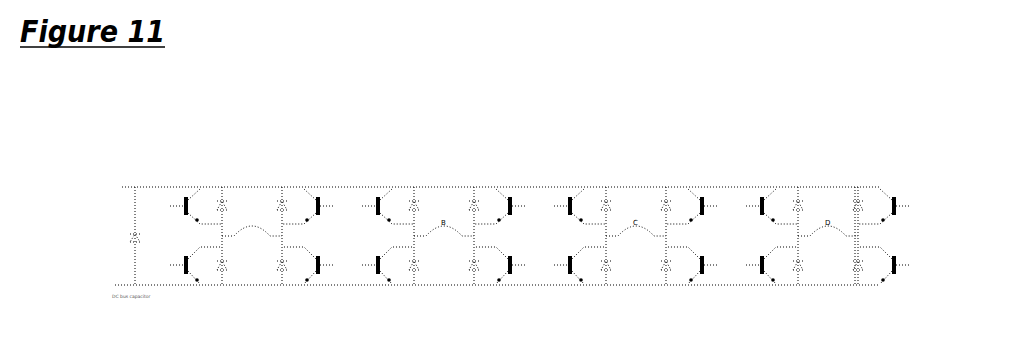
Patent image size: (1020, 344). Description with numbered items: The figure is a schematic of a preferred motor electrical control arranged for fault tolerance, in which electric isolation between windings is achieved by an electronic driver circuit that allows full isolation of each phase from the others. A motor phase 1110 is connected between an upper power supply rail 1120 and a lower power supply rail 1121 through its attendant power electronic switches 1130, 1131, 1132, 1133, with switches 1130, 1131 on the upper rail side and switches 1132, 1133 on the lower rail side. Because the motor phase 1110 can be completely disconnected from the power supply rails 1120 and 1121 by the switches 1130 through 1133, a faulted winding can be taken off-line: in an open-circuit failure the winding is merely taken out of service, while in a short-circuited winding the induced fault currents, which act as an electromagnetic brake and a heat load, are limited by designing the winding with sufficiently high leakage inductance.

The motor phase 1110 is at (243, 231).
The power supply rail 1120 is at (122, 187).
The power supply rail 1121 is at (115, 285).
The power electronic switch 1130 is at (187, 217).
The power electronic switch 1131 is at (330, 206).
The power electronic switch 1132 is at (314, 258).
The power electronic switch 1133 is at (178, 262).